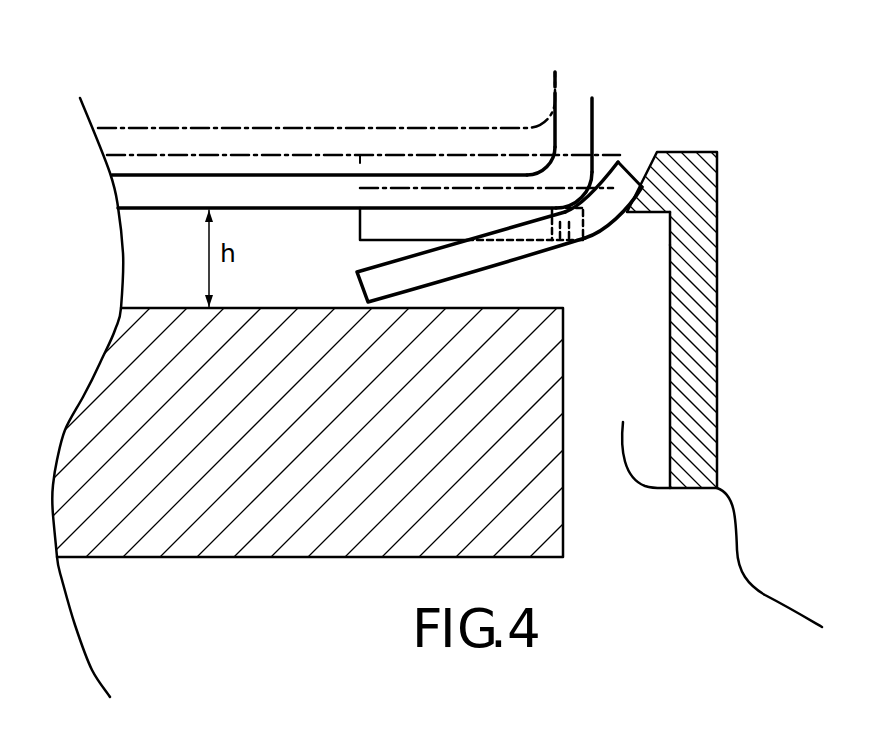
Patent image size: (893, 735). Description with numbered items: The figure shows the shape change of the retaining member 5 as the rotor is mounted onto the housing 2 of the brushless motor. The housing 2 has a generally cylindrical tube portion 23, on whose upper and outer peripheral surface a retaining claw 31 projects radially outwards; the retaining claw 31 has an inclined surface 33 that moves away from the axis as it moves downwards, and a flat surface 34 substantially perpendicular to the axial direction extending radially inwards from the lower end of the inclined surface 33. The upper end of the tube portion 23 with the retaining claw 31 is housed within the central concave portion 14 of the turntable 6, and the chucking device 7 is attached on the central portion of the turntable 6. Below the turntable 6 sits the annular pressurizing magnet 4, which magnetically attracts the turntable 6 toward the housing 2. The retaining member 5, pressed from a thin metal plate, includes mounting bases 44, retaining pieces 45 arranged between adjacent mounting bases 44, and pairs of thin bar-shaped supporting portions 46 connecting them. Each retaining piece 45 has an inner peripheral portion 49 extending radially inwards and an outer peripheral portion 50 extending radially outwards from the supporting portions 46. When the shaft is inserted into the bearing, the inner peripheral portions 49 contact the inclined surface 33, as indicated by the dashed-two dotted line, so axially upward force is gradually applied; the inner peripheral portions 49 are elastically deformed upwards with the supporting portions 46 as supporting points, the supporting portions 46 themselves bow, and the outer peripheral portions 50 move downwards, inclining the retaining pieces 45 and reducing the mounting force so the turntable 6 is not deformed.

The housing 2 is at (718, 298).
The pressurizing magnet 4 is at (267, 535).
The retaining member 5 is at (447, 223).
The turntable 6 is at (155, 193).
The chucking device 7 is at (130, 112).
The central concave portion 14 is at (593, 103).
The tube portion 23 is at (695, 357).
The retaining claw 31 is at (685, 170).
The inclined surface 33 is at (645, 170).
The flat surface 34 is at (668, 216).
The mounting base 44 is at (385, 225).
The retaining piece 45 is at (587, 212).
The supporting portion 46 is at (560, 246).
The inner peripheral portion 49 is at (615, 185).
The outer peripheral portion 50 is at (390, 277).